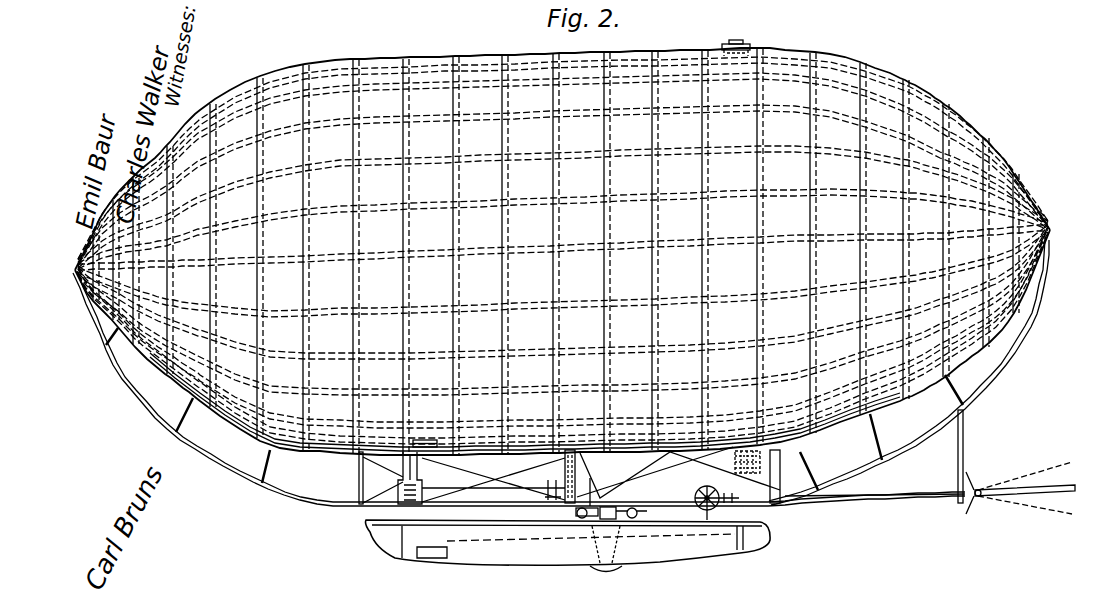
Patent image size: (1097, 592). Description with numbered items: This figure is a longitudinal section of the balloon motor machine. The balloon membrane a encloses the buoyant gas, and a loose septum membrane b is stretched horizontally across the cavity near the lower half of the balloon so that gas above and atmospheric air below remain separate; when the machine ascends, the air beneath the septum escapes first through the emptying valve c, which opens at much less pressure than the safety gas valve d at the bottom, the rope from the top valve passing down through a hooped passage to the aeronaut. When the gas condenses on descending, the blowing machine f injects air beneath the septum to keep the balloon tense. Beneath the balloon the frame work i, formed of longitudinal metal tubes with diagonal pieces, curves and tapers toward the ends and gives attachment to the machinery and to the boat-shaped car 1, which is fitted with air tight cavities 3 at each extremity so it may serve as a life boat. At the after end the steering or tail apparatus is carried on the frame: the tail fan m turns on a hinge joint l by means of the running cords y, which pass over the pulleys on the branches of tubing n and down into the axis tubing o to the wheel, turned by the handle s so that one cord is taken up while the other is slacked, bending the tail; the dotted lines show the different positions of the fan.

The balloon membrane a is at (556, 251).
The septum membrane b is at (563, 250).
The emptying valve c is at (738, 41).
The safety gas valve d is at (789, 436).
The fitting on envelope bottom e is at (404, 434).
The blowing machine f is at (584, 478).
The frame work i is at (561, 373).
The hinge joint l is at (609, 484).
The handle s is at (707, 503).
The axis tubing o is at (875, 485).
The branches of tubing n is at (966, 464).
The tail fan m is at (1025, 483).
The running cord y is at (1025, 487).
The car 1 is at (568, 546).
The air tight cavities 3 is at (571, 534).